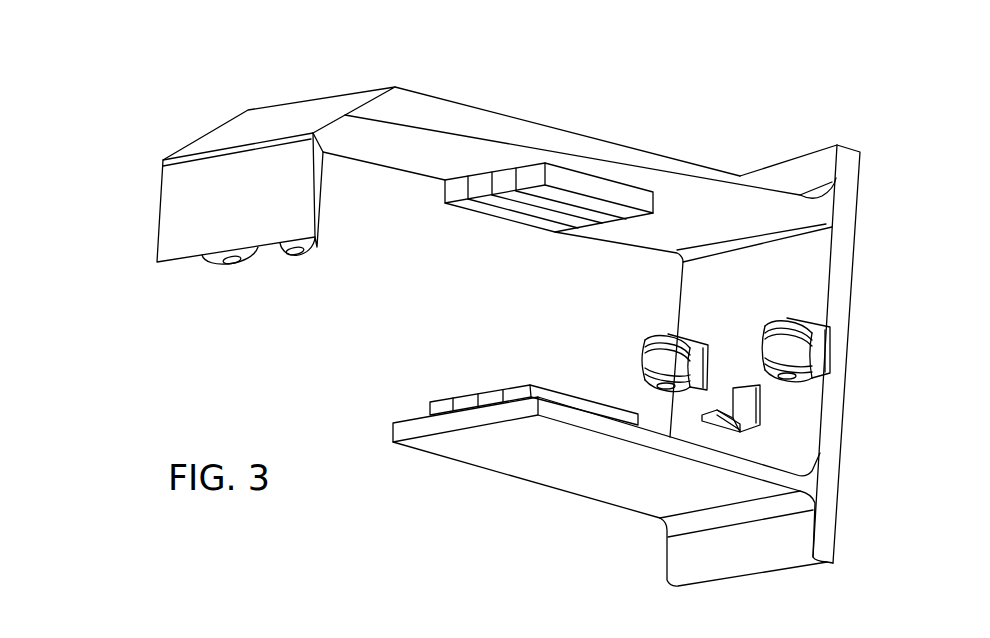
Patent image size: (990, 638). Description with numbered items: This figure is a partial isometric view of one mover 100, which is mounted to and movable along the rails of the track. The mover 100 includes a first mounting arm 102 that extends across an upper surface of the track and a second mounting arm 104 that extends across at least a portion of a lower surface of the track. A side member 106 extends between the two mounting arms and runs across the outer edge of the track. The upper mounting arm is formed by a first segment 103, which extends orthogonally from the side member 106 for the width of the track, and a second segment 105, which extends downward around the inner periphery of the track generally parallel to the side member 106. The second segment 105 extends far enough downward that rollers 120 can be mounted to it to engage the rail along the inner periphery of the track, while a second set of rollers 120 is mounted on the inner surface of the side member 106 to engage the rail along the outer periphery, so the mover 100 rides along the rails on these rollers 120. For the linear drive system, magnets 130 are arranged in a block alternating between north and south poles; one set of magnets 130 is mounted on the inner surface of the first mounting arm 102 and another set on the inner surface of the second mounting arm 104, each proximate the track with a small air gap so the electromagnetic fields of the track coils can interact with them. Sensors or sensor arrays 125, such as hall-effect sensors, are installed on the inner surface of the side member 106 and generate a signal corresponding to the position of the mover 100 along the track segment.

The mover 100 is at (220, 94).
The first mounting arm 102 is at (608, 142).
The first segment 103 is at (507, 116).
The second mounting arm 104 is at (527, 470).
The second segment 105 is at (176, 222).
The side member 106 is at (855, 292).
The rollers 120 is at (312, 258).
The sensors or sensor arrays 125 is at (757, 432).
The magnets 130 is at (446, 207).